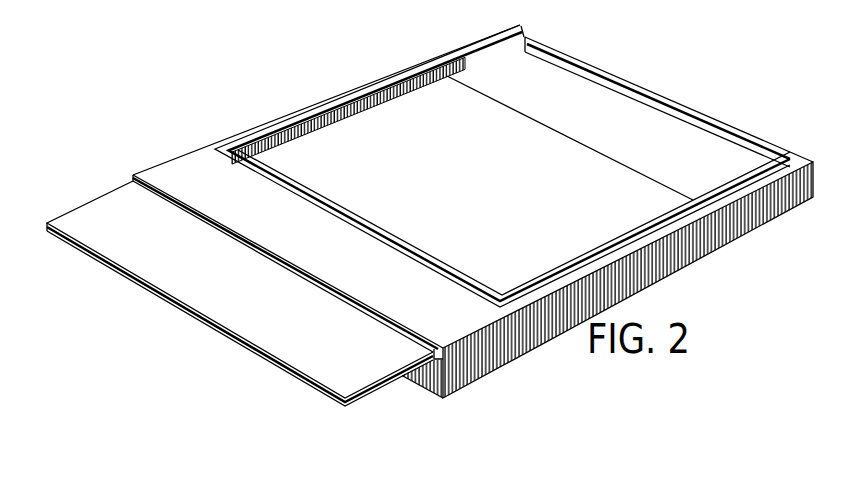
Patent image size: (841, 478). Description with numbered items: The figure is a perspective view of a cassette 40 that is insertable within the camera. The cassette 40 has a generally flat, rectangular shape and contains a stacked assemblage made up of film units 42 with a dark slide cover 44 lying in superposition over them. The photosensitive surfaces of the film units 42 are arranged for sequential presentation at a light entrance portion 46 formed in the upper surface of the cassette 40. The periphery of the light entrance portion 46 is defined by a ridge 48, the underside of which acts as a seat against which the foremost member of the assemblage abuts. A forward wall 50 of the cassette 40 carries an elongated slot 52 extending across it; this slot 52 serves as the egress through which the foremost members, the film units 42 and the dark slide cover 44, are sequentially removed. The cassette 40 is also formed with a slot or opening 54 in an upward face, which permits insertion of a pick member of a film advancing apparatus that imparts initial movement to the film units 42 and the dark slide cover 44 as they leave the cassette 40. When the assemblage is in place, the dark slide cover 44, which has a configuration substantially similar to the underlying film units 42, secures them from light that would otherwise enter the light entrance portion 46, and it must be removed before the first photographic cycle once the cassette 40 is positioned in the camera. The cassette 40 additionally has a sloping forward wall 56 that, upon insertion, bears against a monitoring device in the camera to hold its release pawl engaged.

The cassette 40 is at (473, 211).
The film units 42 is at (618, 135).
The dark slide cover 44 is at (280, 337).
The light entrance portion 46 is at (433, 100).
The ridge 48 is at (344, 103).
The forward wall 50 is at (437, 385).
The elongated slot 52 is at (432, 349).
The opening 54 is at (523, 38).
The forward wall 56 is at (406, 301).